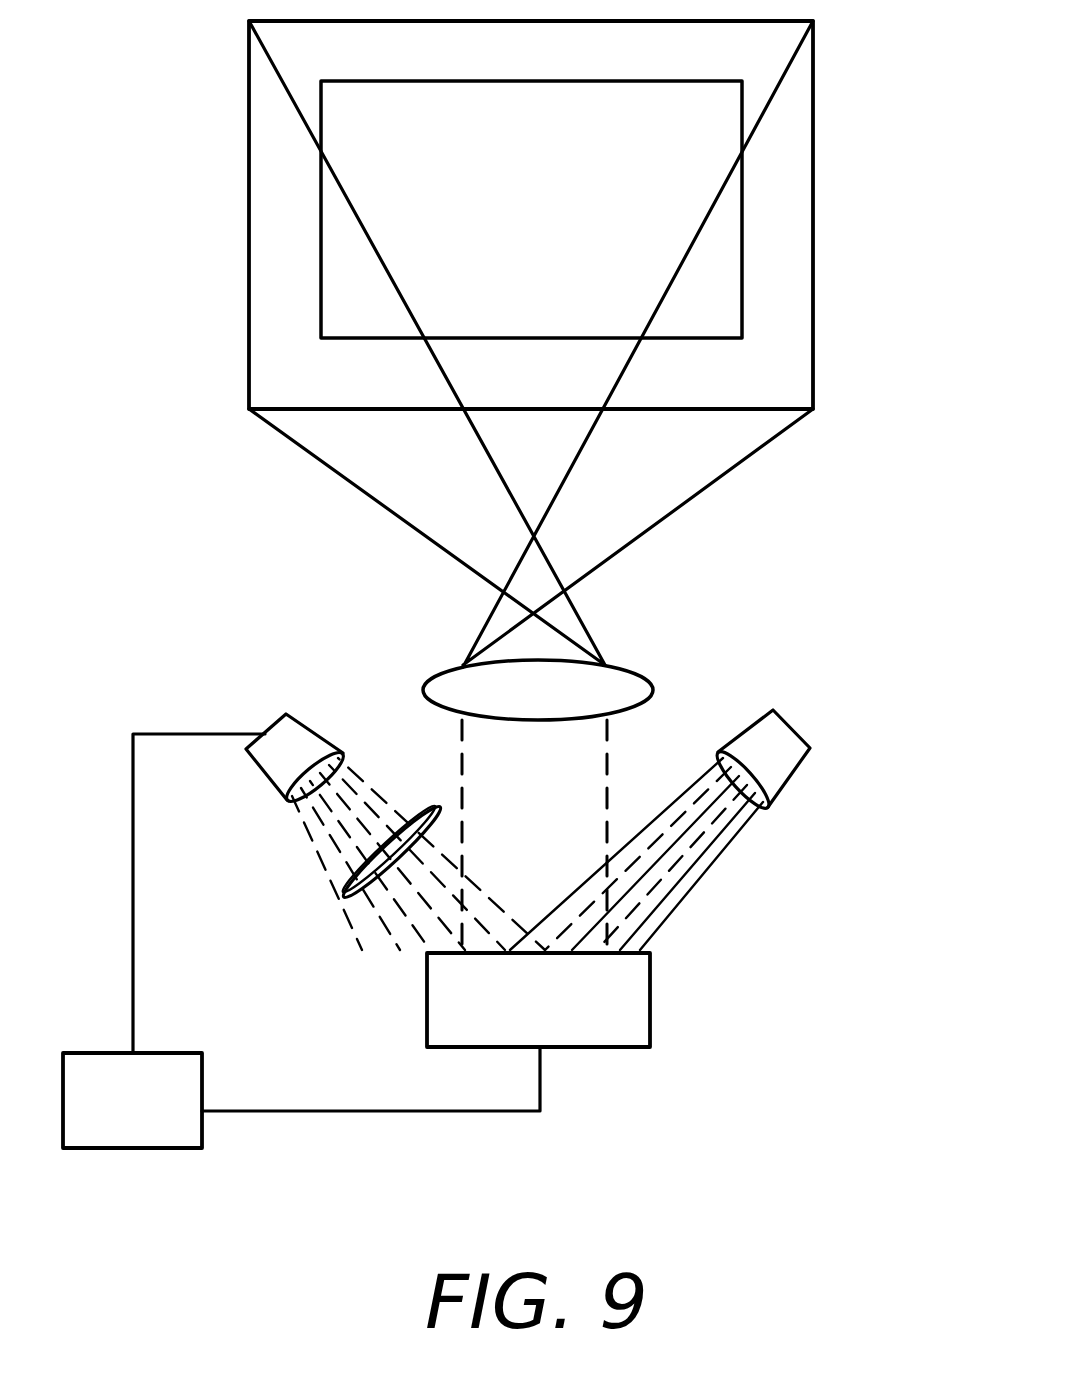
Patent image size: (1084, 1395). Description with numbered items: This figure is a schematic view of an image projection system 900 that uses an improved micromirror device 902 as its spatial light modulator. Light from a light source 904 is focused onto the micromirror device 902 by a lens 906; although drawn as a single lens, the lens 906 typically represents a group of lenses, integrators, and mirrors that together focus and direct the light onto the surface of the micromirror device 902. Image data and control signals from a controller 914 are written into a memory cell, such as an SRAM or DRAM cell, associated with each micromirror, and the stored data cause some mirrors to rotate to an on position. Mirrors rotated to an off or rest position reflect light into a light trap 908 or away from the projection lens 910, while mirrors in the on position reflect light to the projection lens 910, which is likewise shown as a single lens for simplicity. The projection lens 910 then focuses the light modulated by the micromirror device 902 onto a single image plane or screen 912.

The image projection system 900 is at (163, 265).
The micromirror device 902 is at (557, 1019).
The light source 904 is at (283, 730).
The lens 906 is at (340, 890).
The light trap 908 is at (773, 712).
The projection lens 910 is at (633, 683).
The screen 912 is at (813, 208).
The controller 914 is at (167, 1114).